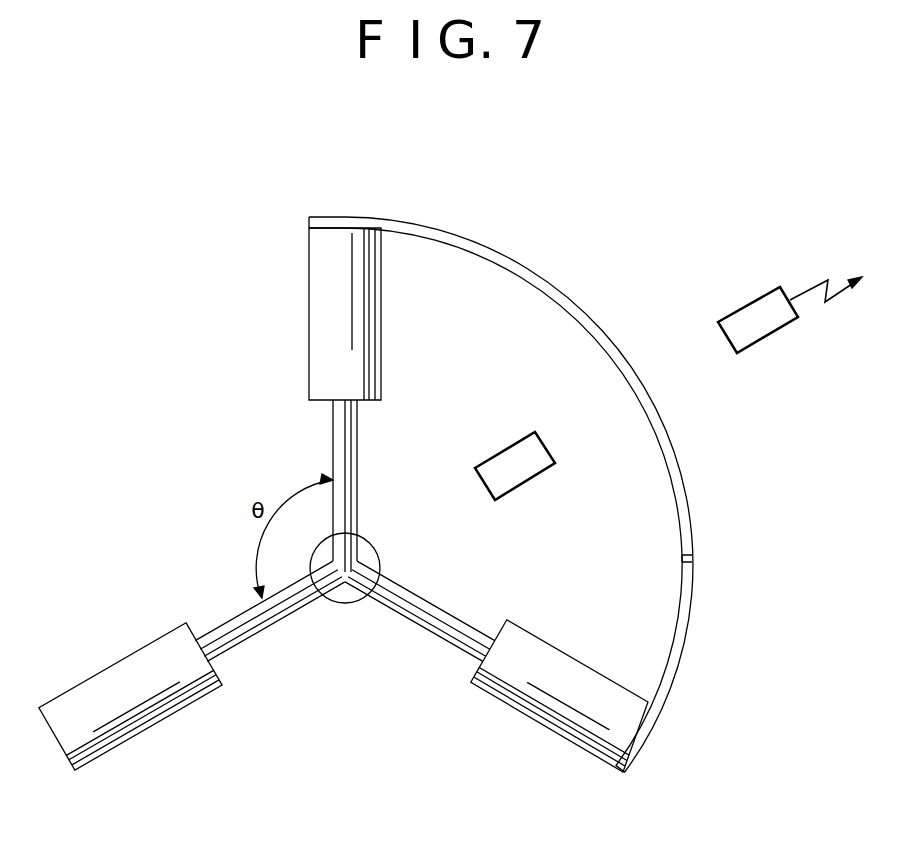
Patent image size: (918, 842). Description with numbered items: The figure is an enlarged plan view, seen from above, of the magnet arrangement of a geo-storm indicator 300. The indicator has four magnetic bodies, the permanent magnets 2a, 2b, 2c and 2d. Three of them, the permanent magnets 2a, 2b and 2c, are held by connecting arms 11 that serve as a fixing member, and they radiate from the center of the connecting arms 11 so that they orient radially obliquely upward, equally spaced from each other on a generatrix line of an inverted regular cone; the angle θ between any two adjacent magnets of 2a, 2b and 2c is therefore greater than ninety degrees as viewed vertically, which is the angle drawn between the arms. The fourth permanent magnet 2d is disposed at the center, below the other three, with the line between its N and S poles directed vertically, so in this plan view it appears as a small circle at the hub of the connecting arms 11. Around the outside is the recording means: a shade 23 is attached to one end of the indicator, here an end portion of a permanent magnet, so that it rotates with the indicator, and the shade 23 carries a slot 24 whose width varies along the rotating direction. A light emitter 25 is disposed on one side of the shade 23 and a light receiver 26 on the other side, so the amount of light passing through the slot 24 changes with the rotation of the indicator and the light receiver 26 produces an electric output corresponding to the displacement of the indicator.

The geo-storm indicator 300 is at (268, 400).
The connecting arms 11 is at (444, 607).
The permanent magnet 2a is at (110, 665).
The permanent magnet 2b is at (380, 318).
The permanent magnet 2c is at (587, 667).
The permanent magnet 2d is at (343, 606).
The shade 23 is at (487, 242).
The slot 24 is at (695, 557).
The light emitter 25 is at (505, 450).
The light receiver 26 is at (740, 302).